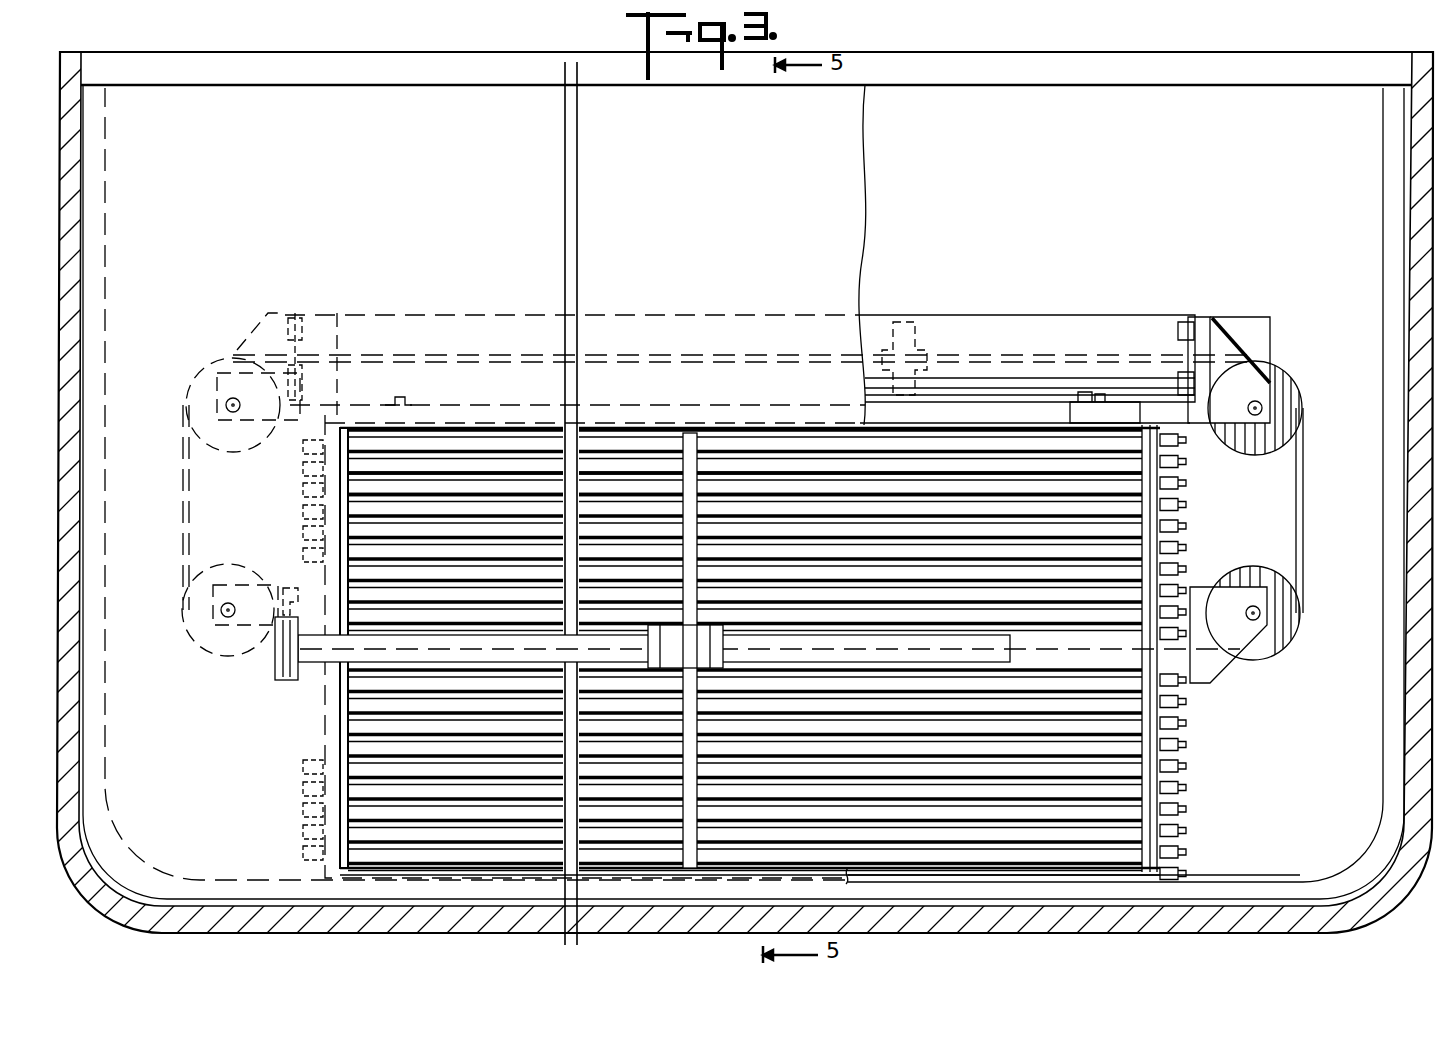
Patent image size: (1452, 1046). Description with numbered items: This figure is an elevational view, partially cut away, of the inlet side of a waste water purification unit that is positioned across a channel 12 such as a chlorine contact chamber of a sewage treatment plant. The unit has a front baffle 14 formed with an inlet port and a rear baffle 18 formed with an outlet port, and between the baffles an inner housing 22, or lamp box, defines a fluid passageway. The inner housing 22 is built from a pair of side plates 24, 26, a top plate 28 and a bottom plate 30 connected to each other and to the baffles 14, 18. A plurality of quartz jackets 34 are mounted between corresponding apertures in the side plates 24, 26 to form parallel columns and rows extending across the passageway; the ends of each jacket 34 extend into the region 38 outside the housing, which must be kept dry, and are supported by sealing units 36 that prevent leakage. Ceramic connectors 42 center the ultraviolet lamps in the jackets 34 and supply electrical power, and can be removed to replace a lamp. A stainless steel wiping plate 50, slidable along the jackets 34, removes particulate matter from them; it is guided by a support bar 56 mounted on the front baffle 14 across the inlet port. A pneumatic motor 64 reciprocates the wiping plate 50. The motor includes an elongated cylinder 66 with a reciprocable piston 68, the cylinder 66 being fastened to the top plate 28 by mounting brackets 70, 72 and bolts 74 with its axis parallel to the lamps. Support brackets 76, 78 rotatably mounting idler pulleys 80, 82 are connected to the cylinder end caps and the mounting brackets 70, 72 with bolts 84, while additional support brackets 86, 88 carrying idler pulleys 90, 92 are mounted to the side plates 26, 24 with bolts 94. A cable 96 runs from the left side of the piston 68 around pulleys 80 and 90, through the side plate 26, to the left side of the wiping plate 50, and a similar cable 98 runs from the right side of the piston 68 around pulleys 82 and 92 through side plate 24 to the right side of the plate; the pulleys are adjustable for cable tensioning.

The channel 12 is at (1424, 406).
The front baffle 14 is at (606, 98).
The rear baffle 18 is at (1286, 95).
The inner housing 22 is at (1148, 555).
The side plate 24 is at (1140, 830).
The side plate 26 is at (340, 741).
The top plate 28 is at (505, 435).
The bottom plate 30 is at (1152, 882).
The quartz jacket 34 is at (430, 445).
The sealing unit 36 is at (305, 836).
The region 38 is at (194, 724).
The ceramic connector 42 is at (1186, 495).
The wiping plate 50 is at (690, 435).
The support bar 56 is at (318, 662).
The pneumatic motor 64 is at (1122, 300).
The cylinder 66 is at (760, 322).
The piston 68 is at (906, 325).
The mounting bracket 70 is at (365, 403).
The mounting bracket 72 is at (1108, 415).
The bolt 74 is at (1083, 395).
The support bracket 76 is at (280, 316).
The support bracket 78 is at (1230, 348).
The idler pulley 80 is at (238, 444).
The idler pulley 82 is at (1285, 397).
The bolt 84 is at (1172, 322).
The support bracket 86 is at (275, 668).
The support bracket 88 is at (1218, 668).
The idler pulley 90 is at (215, 640).
The idler pulley 92 is at (1301, 623).
The bolt 94 is at (302, 592).
The cable 96 is at (186, 521).
The cable 98 is at (1302, 466).